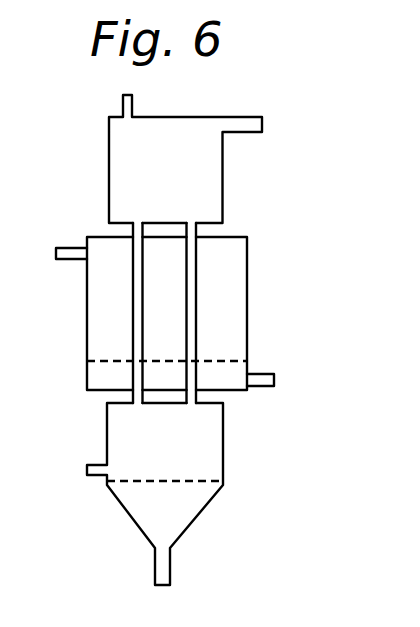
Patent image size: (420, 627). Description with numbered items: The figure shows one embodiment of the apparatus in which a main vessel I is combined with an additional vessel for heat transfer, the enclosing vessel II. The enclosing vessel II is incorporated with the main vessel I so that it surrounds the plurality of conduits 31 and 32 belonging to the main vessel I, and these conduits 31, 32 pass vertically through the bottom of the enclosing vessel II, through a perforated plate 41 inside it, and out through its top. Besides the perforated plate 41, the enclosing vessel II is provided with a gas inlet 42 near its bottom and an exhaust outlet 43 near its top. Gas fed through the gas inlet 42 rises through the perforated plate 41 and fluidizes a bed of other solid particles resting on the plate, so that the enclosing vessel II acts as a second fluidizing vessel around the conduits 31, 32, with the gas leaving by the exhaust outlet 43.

The main vessel I is at (224, 185).
The enclosing vessel II is at (248, 295).
The conduit 31 is at (133, 308).
The conduit 32 is at (196, 315).
The perforated plate 41 is at (108, 363).
The gas inlet 42 is at (268, 376).
The exhaust outlet 43 is at (73, 250).